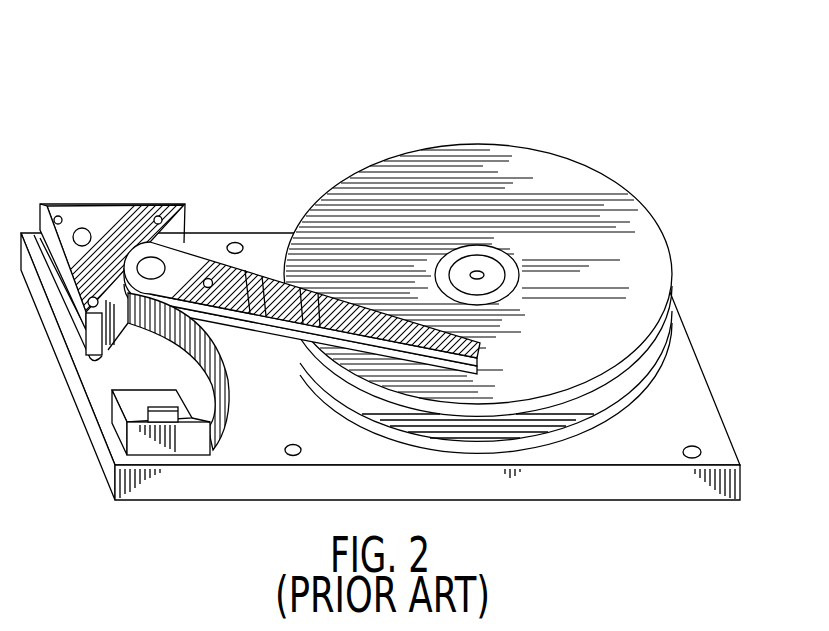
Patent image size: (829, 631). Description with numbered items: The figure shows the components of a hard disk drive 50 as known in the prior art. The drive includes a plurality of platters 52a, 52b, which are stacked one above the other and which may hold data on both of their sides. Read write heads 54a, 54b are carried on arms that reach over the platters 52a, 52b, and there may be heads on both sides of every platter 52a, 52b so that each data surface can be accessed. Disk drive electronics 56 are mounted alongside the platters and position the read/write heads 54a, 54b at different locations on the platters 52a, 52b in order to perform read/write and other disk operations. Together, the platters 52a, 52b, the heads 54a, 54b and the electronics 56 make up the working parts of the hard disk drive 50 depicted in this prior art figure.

The hard disk drive 50 is at (546, 114).
The platter 52a is at (600, 172).
The platter 52b is at (640, 390).
The read write head 54a is at (488, 349).
The read write head 54b is at (268, 345).
The disk drive electronics 56 is at (133, 203).